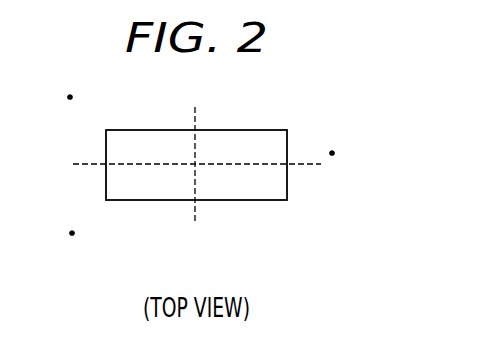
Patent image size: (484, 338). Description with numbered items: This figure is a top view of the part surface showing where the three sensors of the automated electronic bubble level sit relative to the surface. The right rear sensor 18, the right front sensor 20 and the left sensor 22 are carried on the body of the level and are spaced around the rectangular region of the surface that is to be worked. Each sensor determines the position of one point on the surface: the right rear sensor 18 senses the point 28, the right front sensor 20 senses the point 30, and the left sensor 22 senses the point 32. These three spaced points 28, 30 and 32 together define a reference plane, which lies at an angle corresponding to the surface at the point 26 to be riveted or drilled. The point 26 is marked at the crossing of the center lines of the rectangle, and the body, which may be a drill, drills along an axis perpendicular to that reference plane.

The right rear sensor 18 is at (72, 235).
The right front sensor 20 is at (332, 153).
The left sensor 22 is at (70, 97).
The point to be riveted or drilled 26 is at (196, 164).
The point 28 is at (72, 233).
The point 30 is at (332, 153).
The point 32 is at (70, 97).